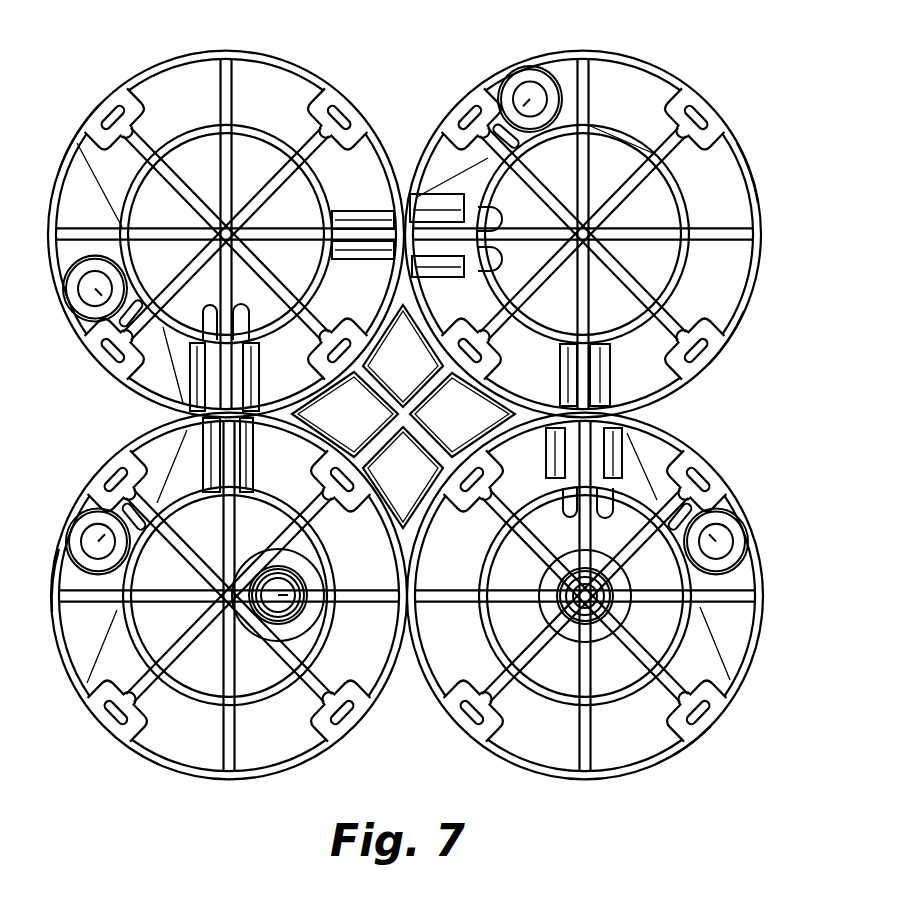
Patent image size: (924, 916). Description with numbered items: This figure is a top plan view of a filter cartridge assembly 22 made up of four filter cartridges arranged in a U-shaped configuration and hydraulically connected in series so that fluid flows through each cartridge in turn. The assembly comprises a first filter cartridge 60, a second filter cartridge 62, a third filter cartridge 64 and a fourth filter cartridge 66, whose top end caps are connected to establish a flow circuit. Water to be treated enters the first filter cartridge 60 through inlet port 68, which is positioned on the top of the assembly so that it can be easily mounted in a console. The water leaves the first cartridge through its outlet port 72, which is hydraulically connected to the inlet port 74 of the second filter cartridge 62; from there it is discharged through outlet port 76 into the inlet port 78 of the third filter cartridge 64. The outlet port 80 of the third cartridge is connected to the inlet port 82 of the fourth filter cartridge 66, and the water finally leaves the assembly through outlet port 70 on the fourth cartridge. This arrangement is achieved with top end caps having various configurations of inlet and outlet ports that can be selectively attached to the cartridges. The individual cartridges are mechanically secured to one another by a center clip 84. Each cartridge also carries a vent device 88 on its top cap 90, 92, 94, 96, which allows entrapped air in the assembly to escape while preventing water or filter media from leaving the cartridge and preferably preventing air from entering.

The filter cartridge assembly 22 is at (760, 354).
The first filter cartridge 60 is at (63, 688).
The second filter cartridge 62 is at (48, 190).
The third filter cartridge 64 is at (646, 56).
The fourth filter cartridge 66 is at (770, 630).
The inlet port 68 is at (257, 614).
The outlet port 70 is at (570, 614).
The outlet port 72 is at (246, 464).
The inlet port 74 is at (265, 378).
The outlet port 76 is at (362, 215).
The inlet port 78 is at (443, 207).
The outlet port 80 is at (613, 360).
The inlet port 82 is at (553, 450).
The center clip 84 is at (440, 432).
The vent device 88 is at (95, 293).
The top cap 90 is at (50, 578).
The top cap 92 is at (60, 142).
The top cap 94 is at (754, 170).
The top cap 96 is at (696, 750).